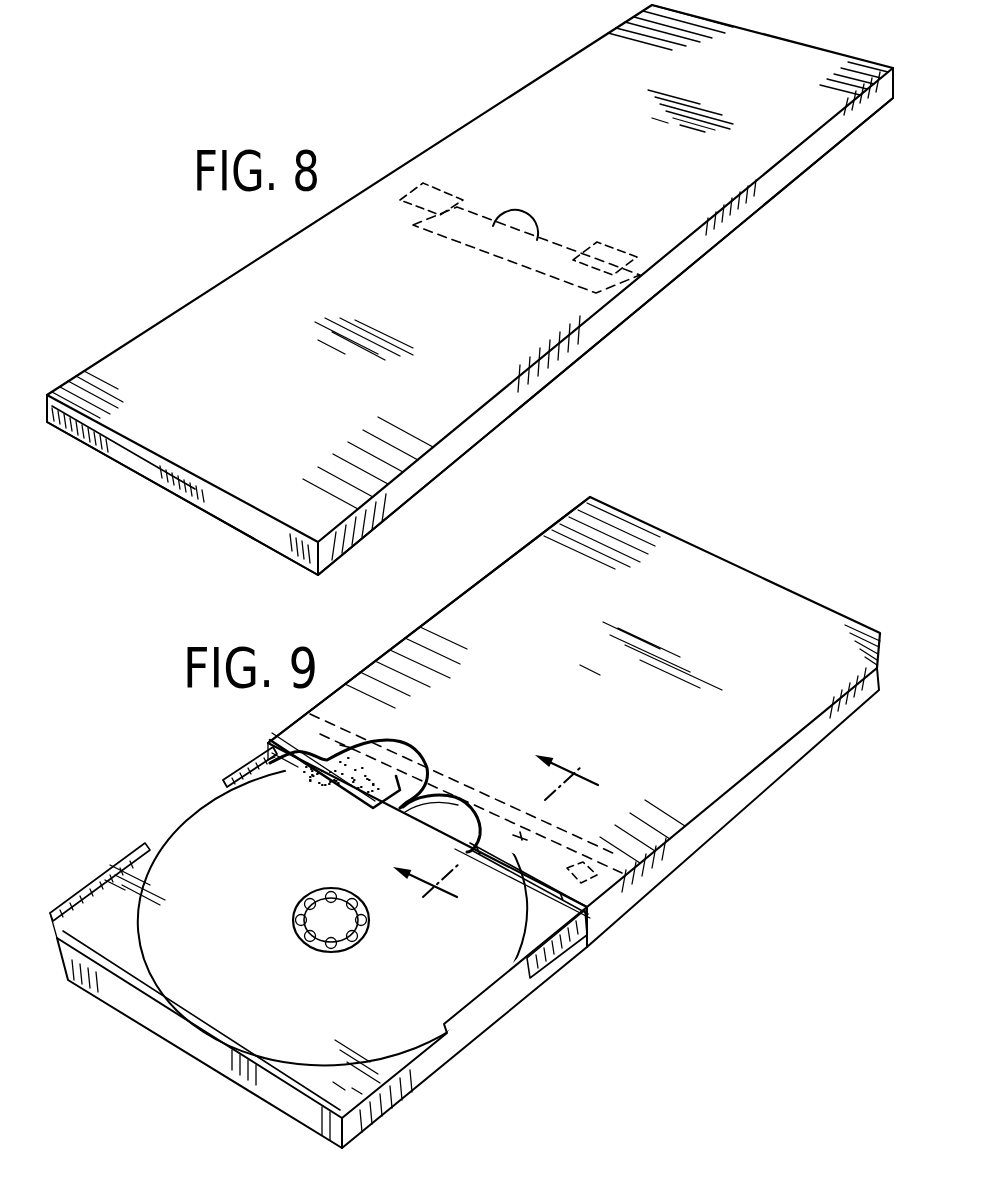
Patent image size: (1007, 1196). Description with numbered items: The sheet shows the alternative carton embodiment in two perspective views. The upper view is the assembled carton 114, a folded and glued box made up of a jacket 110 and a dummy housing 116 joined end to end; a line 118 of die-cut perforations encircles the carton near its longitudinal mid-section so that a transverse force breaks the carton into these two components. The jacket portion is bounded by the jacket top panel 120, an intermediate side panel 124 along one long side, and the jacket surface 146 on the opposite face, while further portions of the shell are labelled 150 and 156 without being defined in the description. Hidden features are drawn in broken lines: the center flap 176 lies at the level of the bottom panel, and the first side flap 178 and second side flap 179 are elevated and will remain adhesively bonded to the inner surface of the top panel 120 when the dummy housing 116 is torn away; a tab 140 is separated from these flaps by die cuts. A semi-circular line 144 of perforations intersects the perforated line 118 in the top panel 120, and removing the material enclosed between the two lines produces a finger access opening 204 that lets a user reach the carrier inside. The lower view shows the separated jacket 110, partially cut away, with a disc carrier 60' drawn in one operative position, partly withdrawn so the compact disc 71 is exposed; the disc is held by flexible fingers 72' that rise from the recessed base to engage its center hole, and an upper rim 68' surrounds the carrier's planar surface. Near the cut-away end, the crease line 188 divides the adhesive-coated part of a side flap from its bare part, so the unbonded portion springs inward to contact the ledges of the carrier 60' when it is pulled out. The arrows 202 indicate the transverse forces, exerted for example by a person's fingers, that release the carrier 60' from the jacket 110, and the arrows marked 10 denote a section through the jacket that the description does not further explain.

In FIG. 8, the jacket 110 is at (790, 223).
In FIG. 9, the jacket 110 is at (730, 548).
In FIG. 8, the carton 114 is at (176, 283).
In FIG. 8, the dummy housing 116 is at (151, 328).
In FIG. 8, the line of diecut perforations 118 is at (643, 292).
In FIG. 8, the jacket top panel 120 is at (668, 178).
In FIG. 9, the jacket top panel 120 is at (645, 734).
In FIG. 8, the intermediate side panel 124 is at (793, 170).
In FIG. 9, the intermediate side panel 124 is at (826, 735).
In FIG. 8, the semi-circular line of perforations 144 is at (532, 222).
In FIG. 8, the jacket surface 146 is at (331, 402).
In FIG. 8, the side wall face 150 is at (532, 387).
In FIG. 8, the lower edge of lid 156 is at (207, 500).
In FIG. 8, the center flap 176 is at (493, 262).
In FIG. 8, the first side flap 178 is at (648, 266).
In FIG. 9, the first side flap 178 is at (520, 880).
In FIG. 8, the second side flap 179 is at (400, 202).
In FIG. 9, the second side flap 179 is at (350, 752).
In FIG. 9, the arrows 202 is at (443, 607).
In FIG. 9, the tab 140 is at (263, 758).
In FIG. 9, the crease line 188 is at (393, 755).
In FIG. 9, the finger access opening 204 is at (457, 803).
In FIG. 9, the compact disc 71 is at (213, 800).
In FIG. 9, the flexible fingers 72' is at (303, 928).
In FIG. 9, the disc carrier 60' is at (318, 995).
In FIG. 9, the upper rim 68' is at (573, 958).
In FIG. 9, the section line 10- 10 is at (514, 840).